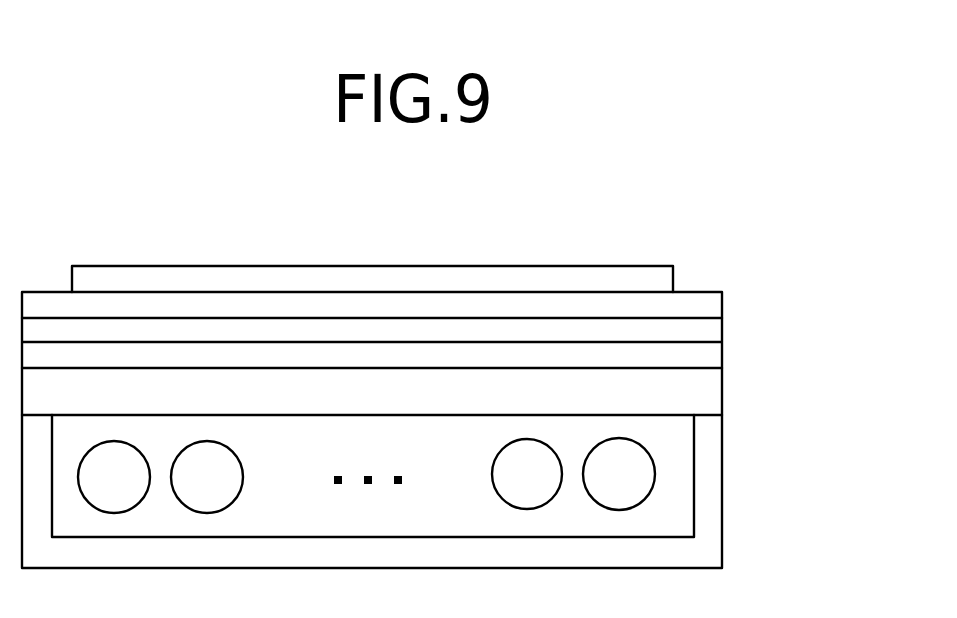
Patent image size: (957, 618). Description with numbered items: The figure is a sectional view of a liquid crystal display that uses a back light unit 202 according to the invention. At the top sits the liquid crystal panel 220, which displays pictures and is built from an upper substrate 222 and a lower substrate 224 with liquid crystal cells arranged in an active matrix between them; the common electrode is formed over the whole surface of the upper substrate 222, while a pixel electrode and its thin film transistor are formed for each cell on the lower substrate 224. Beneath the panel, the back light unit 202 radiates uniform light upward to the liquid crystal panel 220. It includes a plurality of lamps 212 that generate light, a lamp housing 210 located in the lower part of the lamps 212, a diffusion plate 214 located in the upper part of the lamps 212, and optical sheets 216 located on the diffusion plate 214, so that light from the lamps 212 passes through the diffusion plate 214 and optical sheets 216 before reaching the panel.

The back light unit 202 is at (465, 443).
The lamp housing 210 is at (718, 442).
The lamps 212 is at (445, 475).
The diffusion plate 214 is at (718, 395).
The optical sheets 216 is at (718, 322).
The liquid crystal panel 220 is at (428, 259).
The upper substrate 222 is at (699, 255).
The lower substrate 224 is at (718, 297).